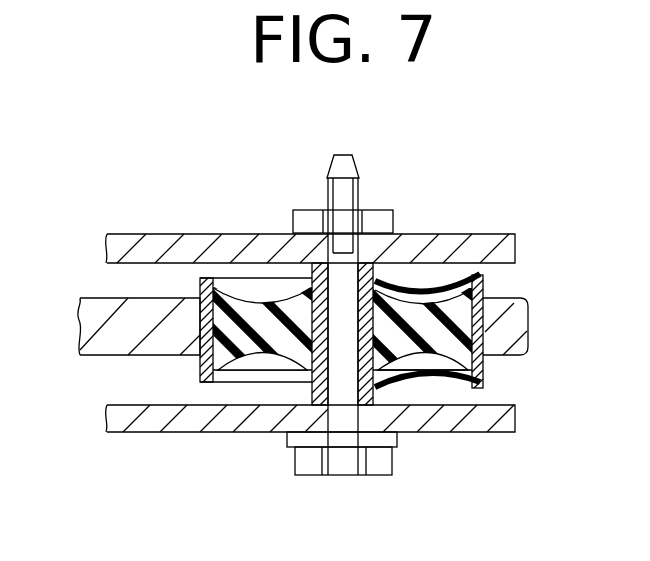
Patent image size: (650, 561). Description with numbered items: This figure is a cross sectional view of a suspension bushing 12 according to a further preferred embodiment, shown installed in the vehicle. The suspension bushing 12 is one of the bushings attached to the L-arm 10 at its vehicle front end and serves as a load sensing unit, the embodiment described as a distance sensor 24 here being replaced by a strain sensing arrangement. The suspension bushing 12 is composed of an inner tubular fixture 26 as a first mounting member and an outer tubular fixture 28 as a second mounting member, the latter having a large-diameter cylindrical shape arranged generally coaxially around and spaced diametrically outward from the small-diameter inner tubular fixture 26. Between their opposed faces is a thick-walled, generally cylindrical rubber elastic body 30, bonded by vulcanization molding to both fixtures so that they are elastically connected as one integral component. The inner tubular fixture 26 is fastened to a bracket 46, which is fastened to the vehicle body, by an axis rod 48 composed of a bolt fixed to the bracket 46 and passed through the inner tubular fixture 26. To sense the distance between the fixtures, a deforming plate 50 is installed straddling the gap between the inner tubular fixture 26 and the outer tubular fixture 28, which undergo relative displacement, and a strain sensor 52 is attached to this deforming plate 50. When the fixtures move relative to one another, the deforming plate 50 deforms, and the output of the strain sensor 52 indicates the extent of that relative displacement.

The L-arm 10 is at (100, 312).
The suspension bushing 12 is at (259, 333).
The distance sensor 24 is at (430, 268).
The inner tubular fixture 26 is at (318, 293).
The outer tubular fixture 28 is at (203, 295).
The rubber elastic body 30 is at (248, 312).
The bracket 46 is at (157, 420).
The axis rod 48 is at (342, 422).
The deforming plate 50 is at (462, 267).
The strain sensor 52 is at (417, 277).